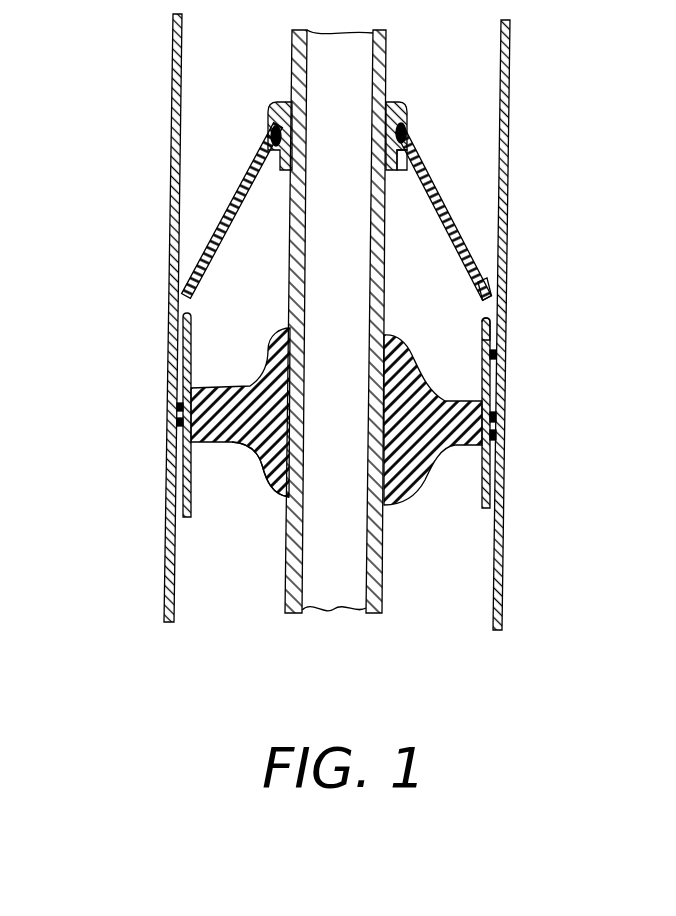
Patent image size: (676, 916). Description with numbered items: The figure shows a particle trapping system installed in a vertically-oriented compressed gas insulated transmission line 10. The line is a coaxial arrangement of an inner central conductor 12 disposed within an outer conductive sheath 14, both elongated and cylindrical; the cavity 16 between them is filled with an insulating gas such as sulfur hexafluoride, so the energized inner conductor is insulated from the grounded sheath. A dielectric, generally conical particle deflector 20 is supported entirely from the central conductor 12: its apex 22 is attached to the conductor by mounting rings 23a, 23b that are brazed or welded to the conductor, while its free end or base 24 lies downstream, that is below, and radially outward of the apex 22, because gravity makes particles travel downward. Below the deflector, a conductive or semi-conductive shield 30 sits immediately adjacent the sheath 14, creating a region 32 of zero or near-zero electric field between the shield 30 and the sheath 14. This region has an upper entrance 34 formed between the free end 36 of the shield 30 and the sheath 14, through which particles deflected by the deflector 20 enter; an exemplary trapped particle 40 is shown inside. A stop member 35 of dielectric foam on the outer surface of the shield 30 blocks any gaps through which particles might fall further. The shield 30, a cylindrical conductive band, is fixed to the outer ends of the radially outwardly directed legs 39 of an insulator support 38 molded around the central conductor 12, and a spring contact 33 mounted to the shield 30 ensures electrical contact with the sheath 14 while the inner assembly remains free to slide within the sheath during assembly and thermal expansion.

The compressed gas insulated transmission line 10 is at (513, 74).
The inner central conductor 12 is at (349, 77).
The outer conductive sheath 14 is at (510, 128).
The cavity 16 is at (244, 56).
The particle deflector 20 is at (438, 205).
The apex 22 is at (404, 128).
The mounting ring 23a is at (397, 104).
The mounting ring 23b is at (418, 154).
The base 24 is at (488, 268).
The shield 30 is at (482, 497).
The region of zero electric field 32 is at (494, 388).
The spring contact 33 is at (177, 503).
The upper entrance 34 is at (495, 318).
The stop member 35 is at (177, 412).
The free end of shield 36 is at (485, 318).
The insulator support 38 is at (254, 463).
The legs 39 is at (221, 390).
The trapped particle 40 is at (497, 355).